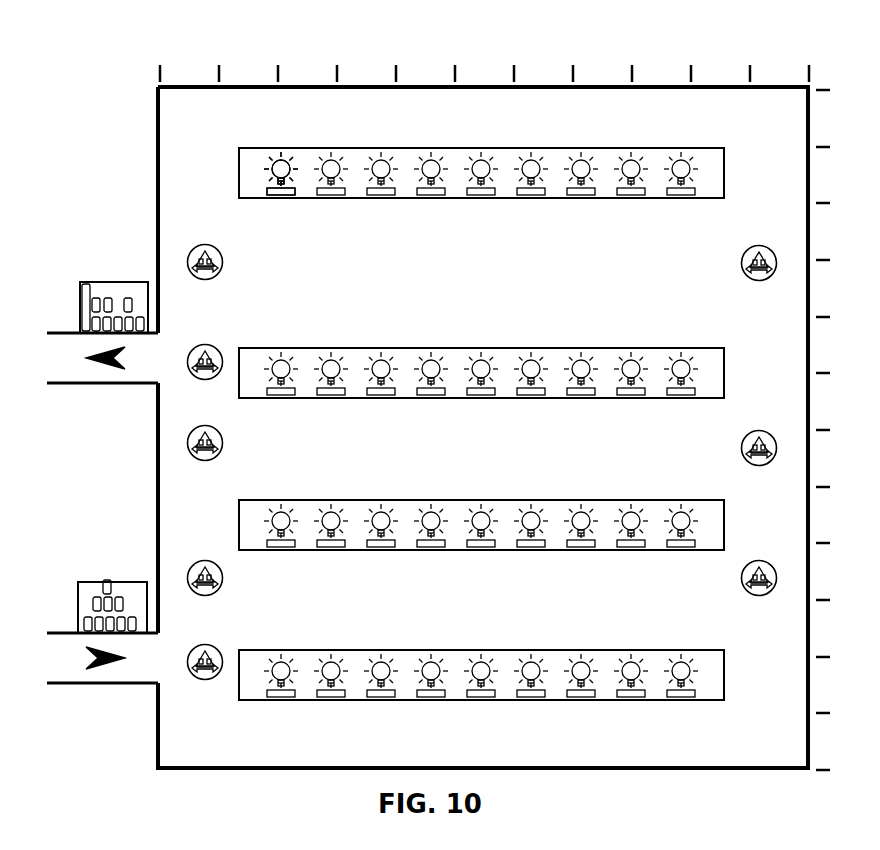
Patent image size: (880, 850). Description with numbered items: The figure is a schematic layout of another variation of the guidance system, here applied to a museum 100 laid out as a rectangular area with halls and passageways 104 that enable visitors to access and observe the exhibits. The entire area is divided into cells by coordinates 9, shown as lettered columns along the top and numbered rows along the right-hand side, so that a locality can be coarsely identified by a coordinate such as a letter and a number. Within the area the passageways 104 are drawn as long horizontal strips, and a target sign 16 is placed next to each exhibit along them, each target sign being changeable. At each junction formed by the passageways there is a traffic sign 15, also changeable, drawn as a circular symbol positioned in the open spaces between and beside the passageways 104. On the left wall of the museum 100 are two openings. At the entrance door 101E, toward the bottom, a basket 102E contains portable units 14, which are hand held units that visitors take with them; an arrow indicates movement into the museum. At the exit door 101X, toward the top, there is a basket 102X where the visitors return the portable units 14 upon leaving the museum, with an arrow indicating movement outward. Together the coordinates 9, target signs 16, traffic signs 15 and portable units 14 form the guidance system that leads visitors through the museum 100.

The museum 100 is at (102, 70).
The coordinates 9 is at (824, 74).
The passageways 104 is at (664, 128).
The target sign 16 is at (283, 165).
The traffic sign 15 is at (206, 243).
The basket 102X is at (133, 282).
The exit door 101X is at (53, 353).
The basket 102E is at (133, 582).
The portable unit 14 is at (85, 620).
The entrance door 101E is at (52, 663).